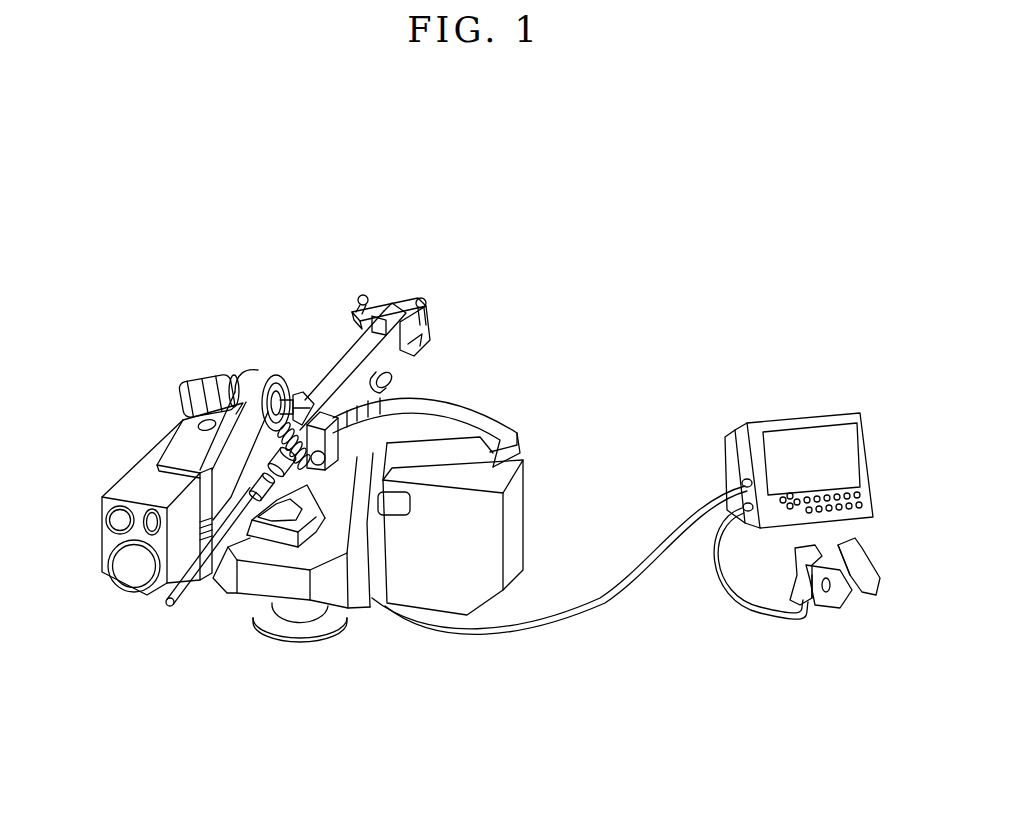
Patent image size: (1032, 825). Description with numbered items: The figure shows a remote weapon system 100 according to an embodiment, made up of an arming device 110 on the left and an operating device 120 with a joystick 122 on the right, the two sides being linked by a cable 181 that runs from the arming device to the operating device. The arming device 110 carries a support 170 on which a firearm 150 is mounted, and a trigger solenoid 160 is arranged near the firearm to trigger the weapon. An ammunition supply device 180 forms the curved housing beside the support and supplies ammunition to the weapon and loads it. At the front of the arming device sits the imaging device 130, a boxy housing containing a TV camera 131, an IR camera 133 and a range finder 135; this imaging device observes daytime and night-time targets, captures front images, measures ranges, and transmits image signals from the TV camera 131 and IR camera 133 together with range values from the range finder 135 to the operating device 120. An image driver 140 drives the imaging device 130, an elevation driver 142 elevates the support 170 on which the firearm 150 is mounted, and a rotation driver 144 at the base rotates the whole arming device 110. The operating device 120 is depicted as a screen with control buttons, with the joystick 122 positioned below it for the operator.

The remote weapon system 100 is at (780, 217).
The arming device 110 is at (406, 278).
The operating device 120 is at (813, 438).
The joystick 122 is at (850, 553).
The imaging device 130 is at (110, 557).
The TV camera 131 is at (118, 510).
The IR camera 133 is at (133, 572).
The range finder 135 is at (163, 532).
The image driver 140 is at (210, 468).
The elevation driver 142 is at (214, 380).
The rotation driver 144 is at (306, 615).
The firearm 150 is at (340, 358).
The trigger solenoid 160 is at (412, 342).
The support 170 is at (386, 388).
The ammunition supply device 180 is at (540, 470).
The cable 181 is at (594, 610).